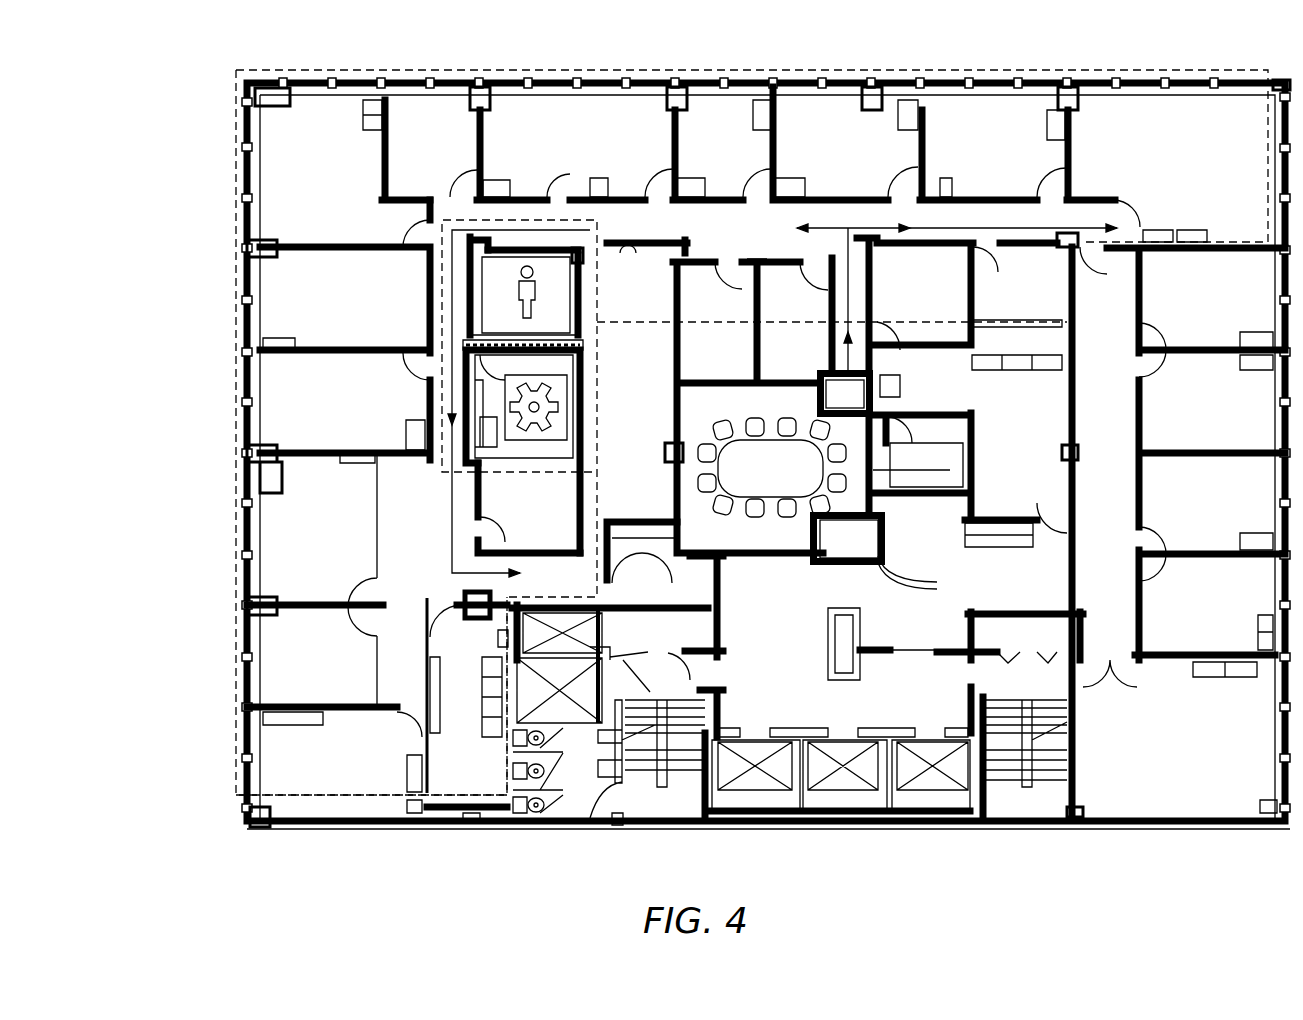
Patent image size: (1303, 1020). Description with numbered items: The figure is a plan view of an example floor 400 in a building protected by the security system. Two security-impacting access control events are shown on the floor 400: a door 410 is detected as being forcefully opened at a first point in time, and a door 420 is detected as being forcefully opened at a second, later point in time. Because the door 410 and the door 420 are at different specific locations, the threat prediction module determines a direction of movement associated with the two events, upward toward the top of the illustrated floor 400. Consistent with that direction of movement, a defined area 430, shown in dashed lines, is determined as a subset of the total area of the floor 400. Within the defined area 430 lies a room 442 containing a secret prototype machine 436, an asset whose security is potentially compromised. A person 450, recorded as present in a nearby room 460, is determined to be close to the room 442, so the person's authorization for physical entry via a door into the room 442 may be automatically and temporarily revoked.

The floor 400 is at (88, 40).
The door 410 is at (833, 560).
The door 420 is at (830, 383).
The defined area 430 is at (334, 797).
The secret prototype machine 436 is at (505, 402).
The room 442 is at (463, 367).
The person 450 is at (527, 268).
The room 460 is at (562, 250).